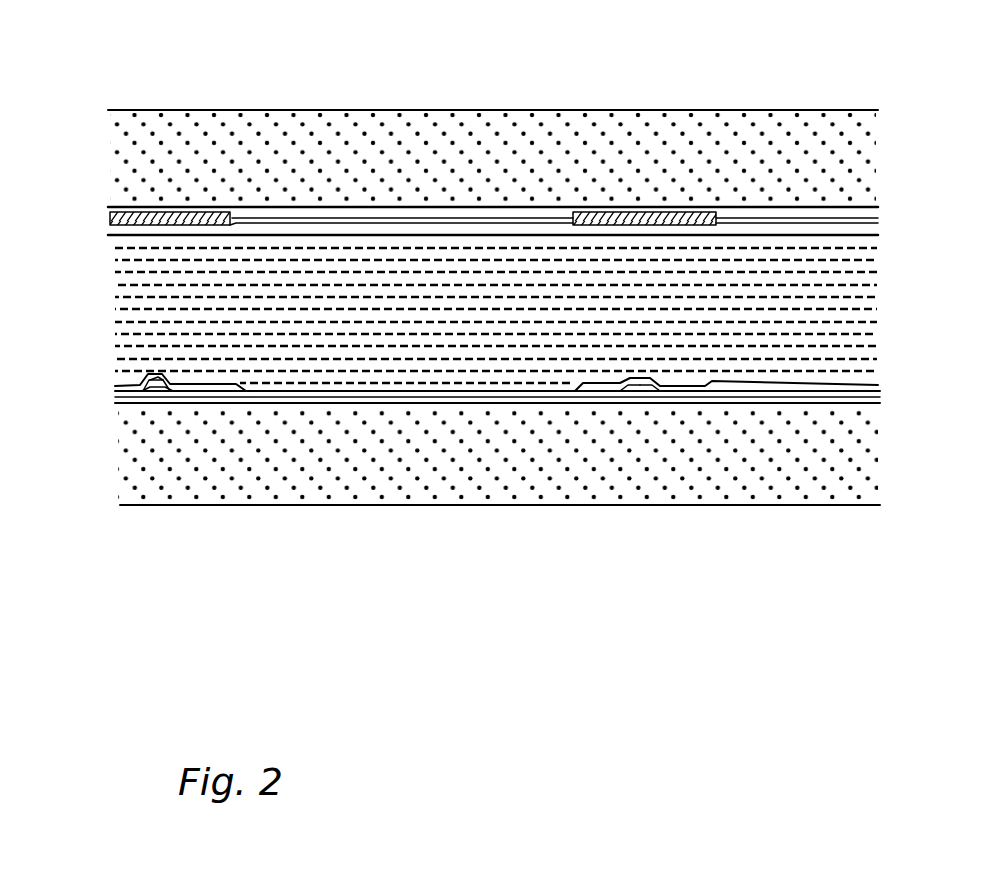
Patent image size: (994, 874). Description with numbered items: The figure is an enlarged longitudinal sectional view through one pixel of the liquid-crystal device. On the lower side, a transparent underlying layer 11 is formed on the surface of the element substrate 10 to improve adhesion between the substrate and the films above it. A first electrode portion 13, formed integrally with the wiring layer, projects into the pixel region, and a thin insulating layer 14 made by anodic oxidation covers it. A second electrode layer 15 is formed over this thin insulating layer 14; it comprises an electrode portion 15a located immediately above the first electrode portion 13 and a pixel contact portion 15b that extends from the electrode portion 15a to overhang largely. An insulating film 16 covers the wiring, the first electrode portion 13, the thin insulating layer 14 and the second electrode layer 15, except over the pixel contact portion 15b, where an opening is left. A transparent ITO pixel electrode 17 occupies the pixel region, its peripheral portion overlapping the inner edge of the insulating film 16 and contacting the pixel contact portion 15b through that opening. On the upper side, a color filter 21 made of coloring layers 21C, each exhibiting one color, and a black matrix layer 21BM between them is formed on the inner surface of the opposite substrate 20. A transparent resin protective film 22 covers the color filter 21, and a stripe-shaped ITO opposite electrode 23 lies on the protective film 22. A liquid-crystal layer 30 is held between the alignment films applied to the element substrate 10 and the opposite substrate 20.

The element substrate 10 is at (470, 506).
The underlying layer 11 is at (330, 405).
The first electrode portion 13 is at (154, 404).
The thin insulating layer 14 is at (154, 383).
The second electrode layer 15 is at (157, 378).
The electrode portion 15a is at (634, 378).
The pixel contact portion 15b is at (697, 386).
The insulating film 16 is at (166, 378).
The pixel electrode 17 is at (300, 390).
The opposite substrate 20 is at (416, 108).
The color filter 21 is at (573, 207).
The coloring layer 21C is at (507, 207).
The black matrix layer 21BM is at (696, 205).
The protective film 22 is at (823, 228).
The opposite electrode 23 is at (535, 232).
The liquid-crystal layer 30 is at (386, 345).